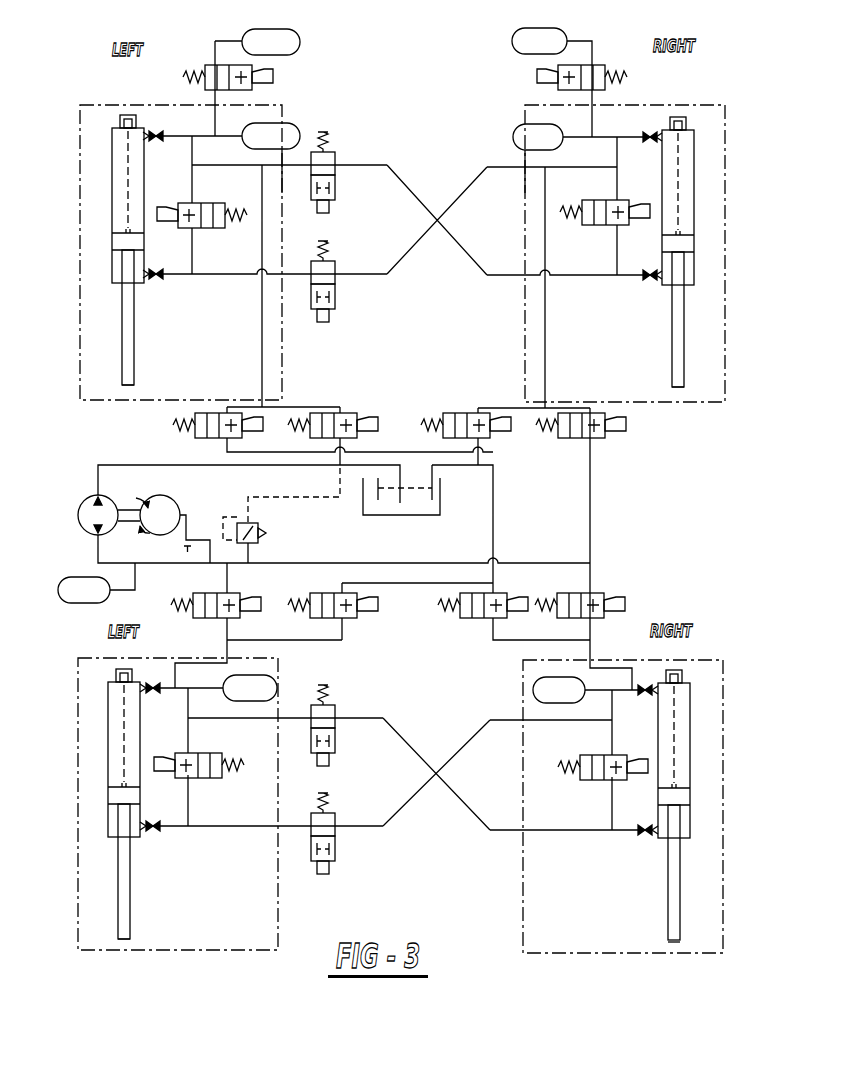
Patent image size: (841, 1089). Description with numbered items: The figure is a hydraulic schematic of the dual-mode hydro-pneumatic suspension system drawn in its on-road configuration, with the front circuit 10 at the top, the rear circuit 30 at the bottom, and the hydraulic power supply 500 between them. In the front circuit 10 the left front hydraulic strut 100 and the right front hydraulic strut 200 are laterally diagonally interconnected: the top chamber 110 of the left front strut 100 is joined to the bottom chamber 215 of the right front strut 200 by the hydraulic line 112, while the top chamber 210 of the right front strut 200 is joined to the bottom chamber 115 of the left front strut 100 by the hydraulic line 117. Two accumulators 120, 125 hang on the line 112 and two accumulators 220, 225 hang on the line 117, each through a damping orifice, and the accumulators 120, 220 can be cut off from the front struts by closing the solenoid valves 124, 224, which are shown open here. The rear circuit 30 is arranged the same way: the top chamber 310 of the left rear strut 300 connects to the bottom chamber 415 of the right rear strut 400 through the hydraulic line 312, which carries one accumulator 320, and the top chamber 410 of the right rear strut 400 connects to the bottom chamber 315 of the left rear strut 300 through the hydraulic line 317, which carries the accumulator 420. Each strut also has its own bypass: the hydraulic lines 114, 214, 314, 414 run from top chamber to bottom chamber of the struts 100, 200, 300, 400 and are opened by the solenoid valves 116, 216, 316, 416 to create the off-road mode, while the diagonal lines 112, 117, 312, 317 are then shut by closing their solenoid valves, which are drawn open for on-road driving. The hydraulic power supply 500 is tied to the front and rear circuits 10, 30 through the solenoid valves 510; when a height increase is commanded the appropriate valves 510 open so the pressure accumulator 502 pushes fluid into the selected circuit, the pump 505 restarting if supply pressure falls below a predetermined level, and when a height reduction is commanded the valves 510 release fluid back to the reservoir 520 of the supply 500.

The front circuit 10 is at (66, 264).
The rear circuit 30 is at (67, 810).
The left front hydraulic strut 100 is at (98, 138).
The top chamber 110 is at (112, 180).
The hydraulic line 112 is at (365, 170).
The hydraulic line 114 is at (193, 256).
The bottom chamber 115 is at (112, 265).
The solenoid valve 116 is at (208, 228).
The hydraulic line 117 is at (363, 282).
The accumulator 120 is at (300, 44).
The solenoid valve 124 is at (205, 70).
The accumulator 125 is at (296, 124).
The right front hydraulic strut 200 is at (738, 110).
The top chamber 210 is at (698, 182).
The hydraulic line 214 is at (616, 240).
The bottom chamber 215 is at (697, 265).
The solenoid valve 216 is at (598, 224).
The accumulator 220 is at (512, 44).
The solenoid valve 224 is at (606, 64).
The accumulator 225 is at (513, 133).
The left rear hydraulic strut 300 is at (70, 697).
The top chamber 310 is at (108, 723).
The hydraulic line 312 is at (352, 722).
The hydraulic line 314 is at (190, 798).
The bottom chamber 315 is at (108, 823).
The solenoid valve 316 is at (210, 776).
The hydraulic line 317 is at (366, 832).
The accumulator 320 is at (277, 676).
The right rear hydraulic strut 400 is at (730, 665).
The top chamber 410 is at (693, 732).
The hydraulic line 414 is at (608, 800).
The bottom chamber 415 is at (693, 822).
The solenoid valve 416 is at (605, 780).
The accumulator 420 is at (533, 690).
The hydraulic power supply 500 is at (78, 464).
The pressure accumulator 502 is at (85, 603).
The pump 505 is at (85, 528).
The solenoid valves 510 is at (623, 443).
The reservoir 520 is at (442, 497).